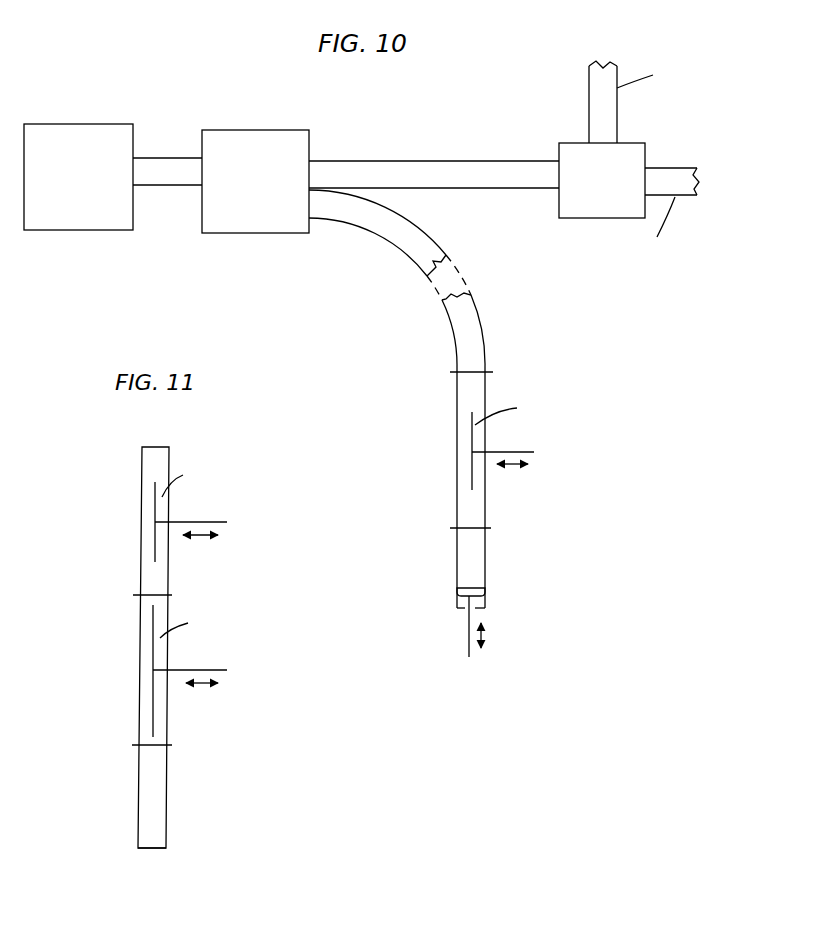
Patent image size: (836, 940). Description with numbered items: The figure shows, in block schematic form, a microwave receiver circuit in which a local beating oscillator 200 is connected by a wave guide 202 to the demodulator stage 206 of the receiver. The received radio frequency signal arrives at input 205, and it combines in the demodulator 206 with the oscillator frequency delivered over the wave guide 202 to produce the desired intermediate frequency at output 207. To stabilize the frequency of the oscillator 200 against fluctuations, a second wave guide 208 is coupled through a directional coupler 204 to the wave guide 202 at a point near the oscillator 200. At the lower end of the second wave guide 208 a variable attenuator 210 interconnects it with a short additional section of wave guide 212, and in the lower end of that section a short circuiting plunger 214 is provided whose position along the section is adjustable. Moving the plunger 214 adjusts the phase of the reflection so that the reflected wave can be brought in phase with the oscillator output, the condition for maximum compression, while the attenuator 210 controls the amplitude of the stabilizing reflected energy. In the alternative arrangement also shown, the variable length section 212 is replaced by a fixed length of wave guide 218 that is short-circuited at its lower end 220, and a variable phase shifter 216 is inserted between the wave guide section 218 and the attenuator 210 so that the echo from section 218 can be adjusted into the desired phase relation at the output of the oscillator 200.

In FIG. 10, the beating oscillator 200 is at (73, 134).
In FIG. 10, the wave guide 202 is at (423, 168).
In FIG. 10, the directional coupler 204 is at (250, 138).
In FIG. 10, the input 205 is at (590, 106).
In FIG. 10, the demodulator stage 206 is at (628, 150).
In FIG. 10, the output 207 is at (668, 177).
In FIG. 10, the second wave guide 208 is at (458, 317).
In FIG. 10, the variable attenuator 210 is at (467, 457).
In FIG. 11, the variable attenuator 210 is at (147, 510).
In FIG. 10, the additional section of wave guide 212 is at (485, 560).
In FIG. 10, the short circuiting plunger 214 is at (460, 596).
In FIG. 11, the variable phase shifter 216 is at (138, 672).
In FIG. 11, the fixed length of wave guide 218 is at (167, 787).
In FIG. 11, the short-circuited lower end 220 is at (147, 850).